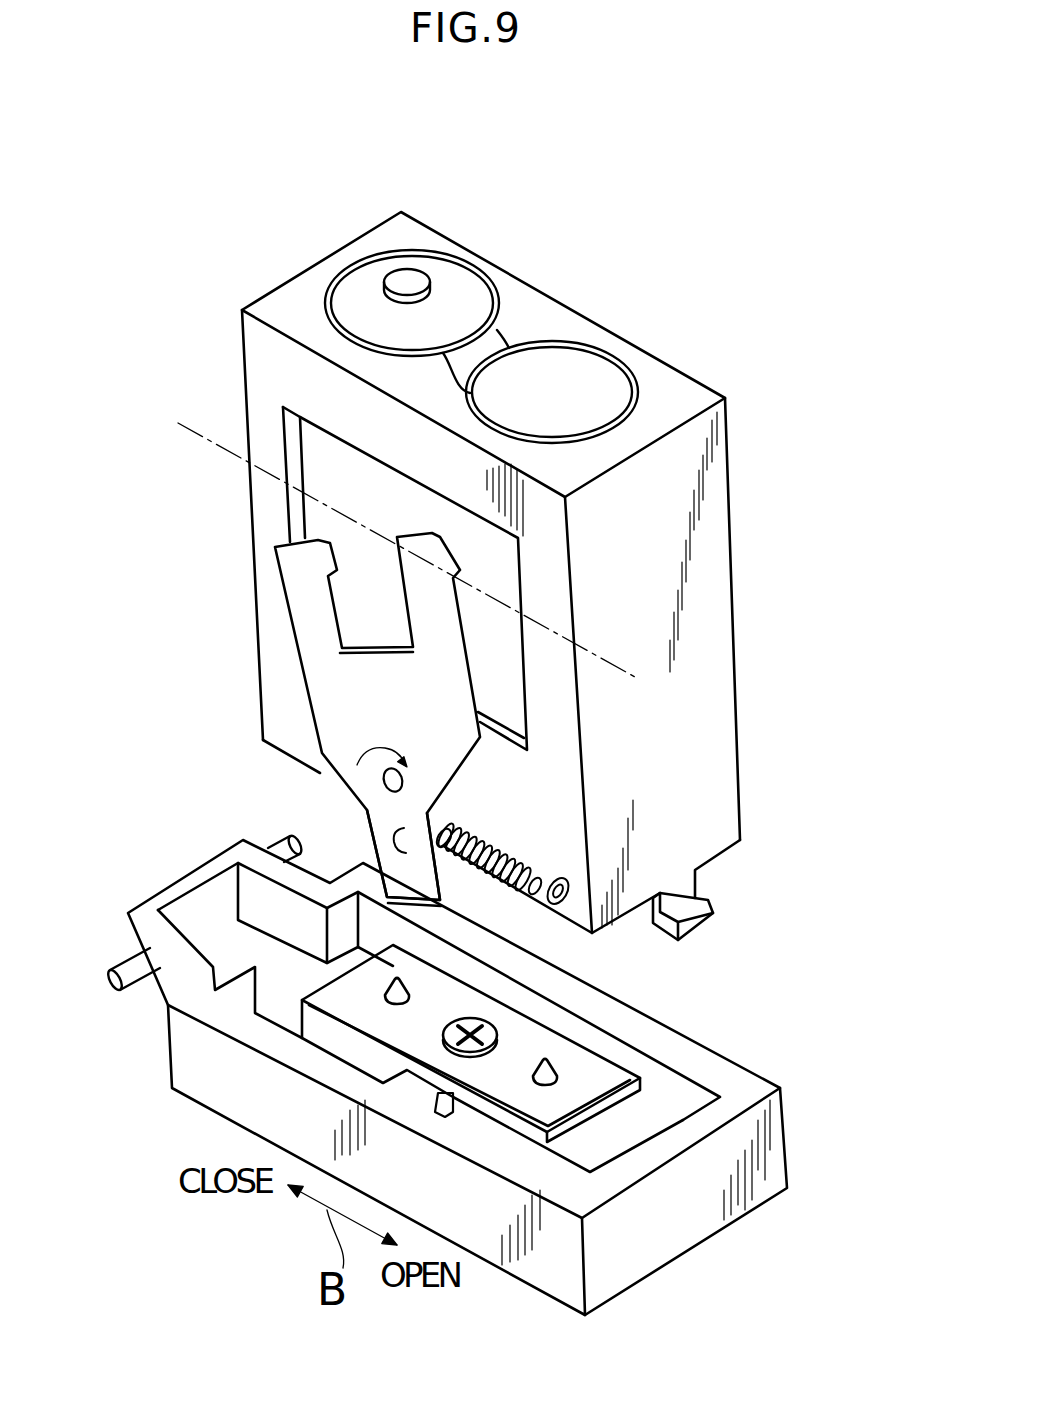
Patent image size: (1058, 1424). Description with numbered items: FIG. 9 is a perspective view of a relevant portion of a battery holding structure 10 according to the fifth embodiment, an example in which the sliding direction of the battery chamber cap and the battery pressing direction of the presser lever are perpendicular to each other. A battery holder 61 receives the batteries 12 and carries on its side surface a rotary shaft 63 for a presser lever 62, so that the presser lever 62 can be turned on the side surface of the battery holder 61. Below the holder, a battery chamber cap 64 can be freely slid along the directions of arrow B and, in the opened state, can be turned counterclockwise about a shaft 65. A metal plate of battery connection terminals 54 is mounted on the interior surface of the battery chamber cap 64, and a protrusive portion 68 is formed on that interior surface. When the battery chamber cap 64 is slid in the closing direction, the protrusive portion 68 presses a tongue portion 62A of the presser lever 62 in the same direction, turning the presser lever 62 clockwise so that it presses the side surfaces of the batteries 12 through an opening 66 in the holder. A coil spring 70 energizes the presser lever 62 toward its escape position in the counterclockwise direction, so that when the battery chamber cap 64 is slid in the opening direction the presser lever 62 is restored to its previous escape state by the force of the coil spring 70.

The section line / apparatus 10 is at (192, 437).
The batteries 12 is at (458, 290).
The battery connection terminals 54 is at (410, 988).
The battery holder 61 is at (723, 613).
The presser lever 62 is at (328, 695).
The tongue portion 62A is at (445, 900).
The rotary shaft 63 is at (400, 783).
The battery chamber cap 64 is at (777, 1142).
The shaft 65 is at (147, 993).
The opening 66 is at (320, 462).
The protrusive portion 68 is at (453, 1097).
The coil spring 70 is at (515, 865).